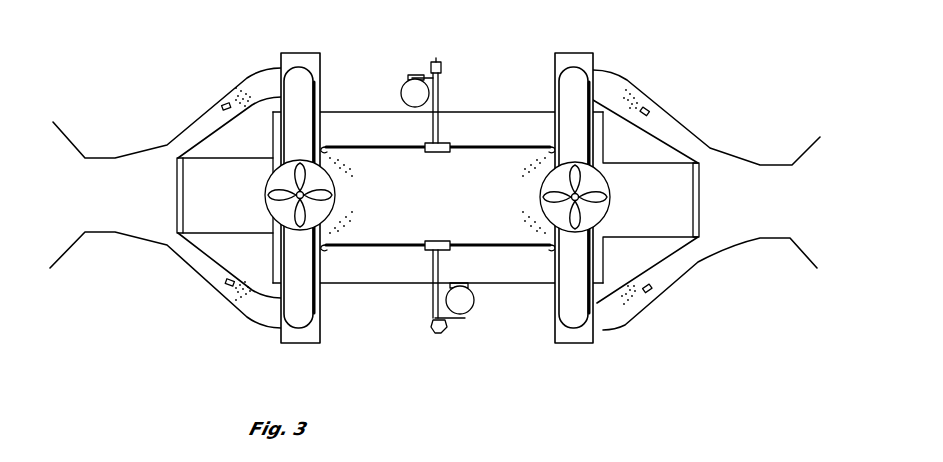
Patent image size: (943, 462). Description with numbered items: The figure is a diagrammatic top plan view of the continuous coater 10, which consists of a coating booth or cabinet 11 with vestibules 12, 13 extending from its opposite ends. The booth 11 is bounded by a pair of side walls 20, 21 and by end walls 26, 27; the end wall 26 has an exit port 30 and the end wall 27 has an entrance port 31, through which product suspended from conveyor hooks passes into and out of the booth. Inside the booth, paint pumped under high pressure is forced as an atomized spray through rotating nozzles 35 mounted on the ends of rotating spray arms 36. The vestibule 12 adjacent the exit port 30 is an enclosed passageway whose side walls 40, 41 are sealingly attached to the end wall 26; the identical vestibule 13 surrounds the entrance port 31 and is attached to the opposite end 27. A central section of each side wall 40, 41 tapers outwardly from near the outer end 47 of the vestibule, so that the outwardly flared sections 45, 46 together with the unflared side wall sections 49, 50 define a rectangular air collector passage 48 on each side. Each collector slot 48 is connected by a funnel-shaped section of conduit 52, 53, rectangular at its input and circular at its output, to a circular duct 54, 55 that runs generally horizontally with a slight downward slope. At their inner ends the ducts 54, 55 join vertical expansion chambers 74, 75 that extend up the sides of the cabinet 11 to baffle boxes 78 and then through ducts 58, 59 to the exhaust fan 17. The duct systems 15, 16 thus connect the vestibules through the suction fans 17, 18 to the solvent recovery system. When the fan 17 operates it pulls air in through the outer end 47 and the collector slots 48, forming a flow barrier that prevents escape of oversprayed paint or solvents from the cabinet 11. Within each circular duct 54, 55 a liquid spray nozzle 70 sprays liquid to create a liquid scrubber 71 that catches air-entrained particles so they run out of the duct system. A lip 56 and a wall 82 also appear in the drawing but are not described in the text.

The coater 10 is at (262, 375).
The coating booth 11 is at (438, 192).
The vestibule 12 is at (708, 201).
The vestibule 13 is at (165, 183).
The duct system 15 is at (582, 38).
The duct system 16 is at (305, 36).
The suction fan 17 is at (602, 187).
The suction fan 18 is at (322, 193).
The side wall 20 is at (393, 282).
The side wall 21 is at (478, 108).
The end wall 26 is at (603, 143).
The end wall 27 is at (277, 252).
The exit port 30 is at (607, 240).
The entrance port 31 is at (272, 157).
The rotating nozzle 35 is at (332, 148).
The rotating spray arm 36 is at (420, 153).
The side wall 40 is at (655, 233).
The side wall 41 is at (655, 165).
The outwardly flared section 45 is at (733, 248).
The outwardly flared section 46 is at (741, 160).
The outer end 47 is at (820, 248).
The air collector passage 48 is at (702, 153).
The unflared side wall section 49 is at (667, 238).
The unflared side wall section 50 is at (668, 157).
The funnel-shaped conduit section 52 is at (678, 278).
The funnel-shaped conduit section 53 is at (700, 155).
The circular duct 54 is at (613, 333).
The circular duct 55 is at (608, 72).
The outlet upper lip 56 is at (818, 140).
The duct 58 is at (570, 312).
The duct 59 is at (570, 78).
The liquid spray nozzle 70 is at (645, 110).
The liquid scrubber 71 is at (628, 93).
The expansion chamber 74 is at (572, 393).
The expansion chamber 75 is at (562, 52).
The baffle box 78 is at (562, 52).
The outlet end wall 82 is at (700, 217).